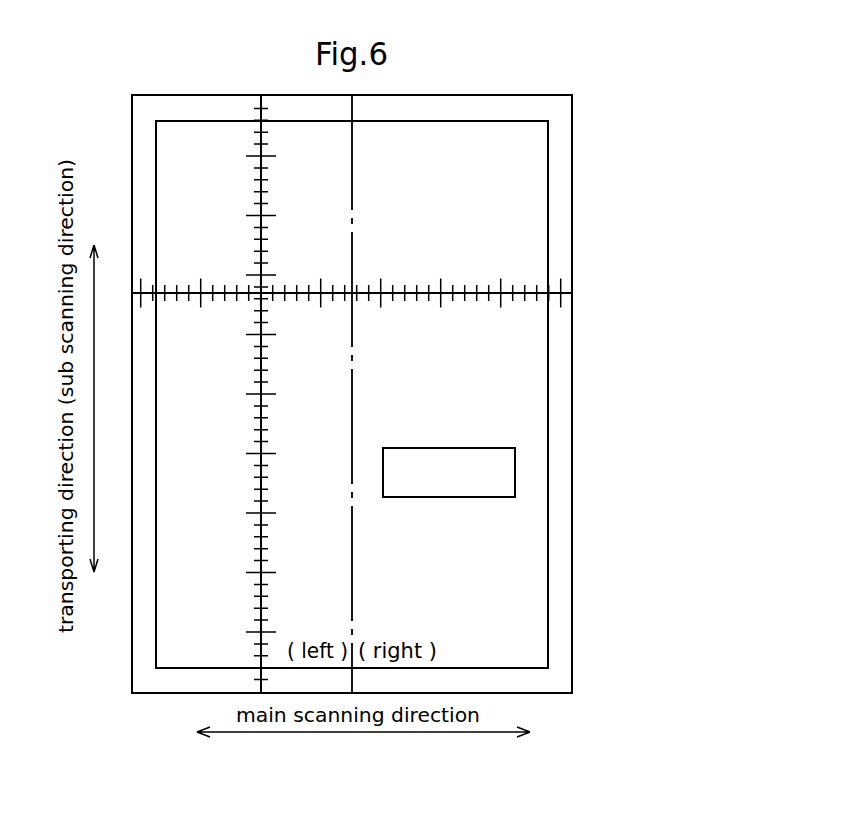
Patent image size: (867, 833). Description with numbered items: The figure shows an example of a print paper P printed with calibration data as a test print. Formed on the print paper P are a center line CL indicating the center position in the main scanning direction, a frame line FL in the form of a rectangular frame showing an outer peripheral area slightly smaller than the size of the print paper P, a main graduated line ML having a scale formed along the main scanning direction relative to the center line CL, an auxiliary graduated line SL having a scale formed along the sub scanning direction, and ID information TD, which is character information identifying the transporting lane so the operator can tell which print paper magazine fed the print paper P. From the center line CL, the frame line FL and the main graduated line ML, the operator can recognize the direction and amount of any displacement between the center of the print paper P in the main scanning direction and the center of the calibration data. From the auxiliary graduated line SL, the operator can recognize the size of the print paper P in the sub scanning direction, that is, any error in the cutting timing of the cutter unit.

The print paper P is at (572, 173).
The frame line FL is at (455, 120).
The center line CL is at (352, 213).
The auxiliary graduated line SL is at (262, 424).
The main graduated line ML is at (445, 295).
The ID information TD is at (515, 471).